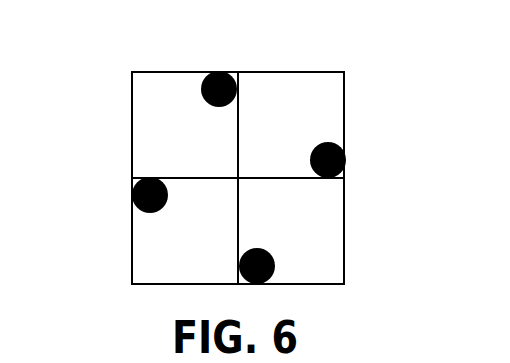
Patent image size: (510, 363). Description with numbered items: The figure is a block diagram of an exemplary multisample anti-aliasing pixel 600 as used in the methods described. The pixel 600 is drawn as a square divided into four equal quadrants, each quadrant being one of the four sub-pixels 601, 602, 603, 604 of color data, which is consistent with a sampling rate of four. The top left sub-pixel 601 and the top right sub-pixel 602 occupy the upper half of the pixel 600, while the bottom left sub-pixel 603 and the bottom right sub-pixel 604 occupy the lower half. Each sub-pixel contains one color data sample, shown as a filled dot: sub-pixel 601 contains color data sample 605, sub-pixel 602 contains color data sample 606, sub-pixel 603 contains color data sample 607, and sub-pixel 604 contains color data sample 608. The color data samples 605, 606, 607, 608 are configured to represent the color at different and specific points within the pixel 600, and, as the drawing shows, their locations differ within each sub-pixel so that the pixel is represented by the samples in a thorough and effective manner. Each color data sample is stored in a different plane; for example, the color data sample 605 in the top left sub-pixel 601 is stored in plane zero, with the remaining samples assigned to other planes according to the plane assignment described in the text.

The pixel 600 is at (293, 43).
The sub-pixel 601 is at (143, 147).
The sub-pixel 602 is at (333, 108).
The sub-pixel 603 is at (143, 256).
The sub-pixel 604 is at (333, 221).
The color data sample 605 is at (203, 83).
The color data sample 606 is at (343, 160).
The color data sample 607 is at (133, 195).
The color data sample 608 is at (275, 270).